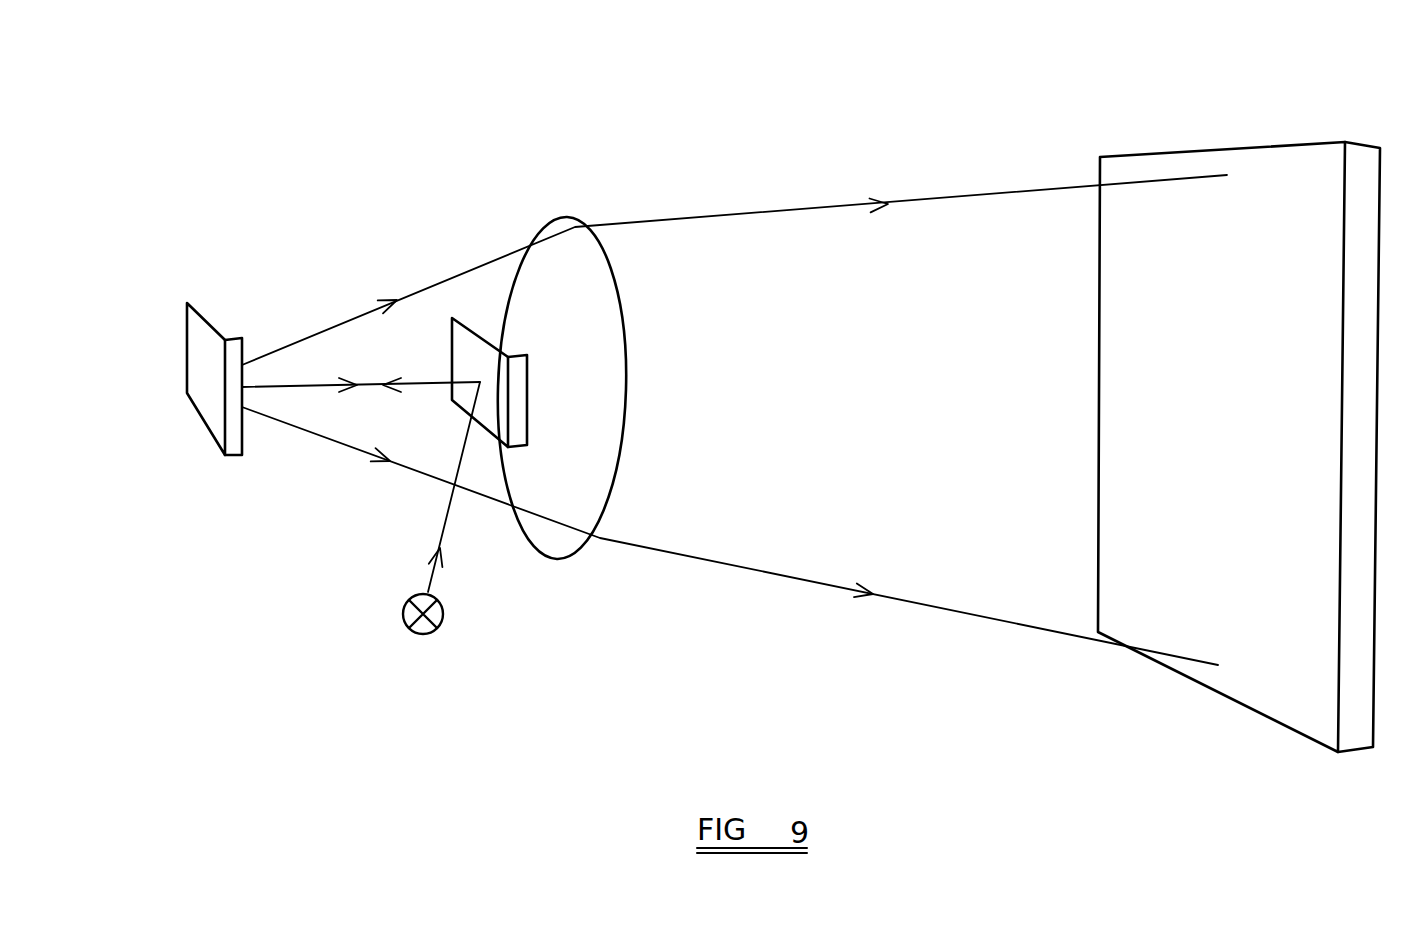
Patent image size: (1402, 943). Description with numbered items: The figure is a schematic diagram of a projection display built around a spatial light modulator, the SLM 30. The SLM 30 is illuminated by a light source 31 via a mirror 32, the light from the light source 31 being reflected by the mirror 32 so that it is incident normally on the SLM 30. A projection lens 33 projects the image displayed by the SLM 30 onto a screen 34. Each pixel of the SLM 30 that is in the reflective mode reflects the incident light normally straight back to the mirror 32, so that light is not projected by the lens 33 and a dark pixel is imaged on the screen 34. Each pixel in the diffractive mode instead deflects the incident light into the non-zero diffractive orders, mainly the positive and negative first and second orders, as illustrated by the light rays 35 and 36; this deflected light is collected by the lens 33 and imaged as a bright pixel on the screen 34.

The SLM 30 is at (190, 303).
The light source 31 is at (443, 623).
The mirror 32 is at (467, 317).
The projection lens 33 is at (557, 217).
The screen 34 is at (1230, 683).
The light ray 35 is at (330, 327).
The light ray 36 is at (323, 437).